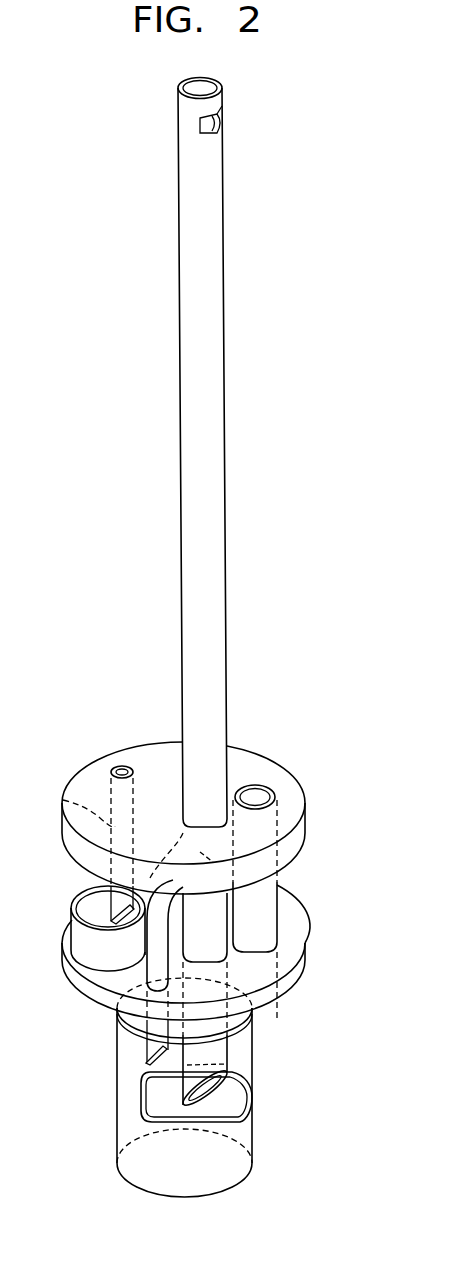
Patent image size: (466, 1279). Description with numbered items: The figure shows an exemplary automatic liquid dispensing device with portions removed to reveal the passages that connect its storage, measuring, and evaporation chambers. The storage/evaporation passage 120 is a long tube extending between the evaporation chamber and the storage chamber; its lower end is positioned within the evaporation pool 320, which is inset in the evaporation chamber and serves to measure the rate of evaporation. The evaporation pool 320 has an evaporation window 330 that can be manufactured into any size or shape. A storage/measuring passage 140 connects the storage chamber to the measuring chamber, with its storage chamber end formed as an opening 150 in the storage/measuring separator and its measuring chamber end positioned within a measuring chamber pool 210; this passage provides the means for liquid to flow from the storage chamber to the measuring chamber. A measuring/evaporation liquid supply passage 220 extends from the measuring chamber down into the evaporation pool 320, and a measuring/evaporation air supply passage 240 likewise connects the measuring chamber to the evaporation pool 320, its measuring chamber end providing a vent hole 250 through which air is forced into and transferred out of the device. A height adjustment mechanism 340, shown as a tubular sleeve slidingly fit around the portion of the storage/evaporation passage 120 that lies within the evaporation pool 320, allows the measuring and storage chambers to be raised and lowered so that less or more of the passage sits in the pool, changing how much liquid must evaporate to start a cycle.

The storage/evaporation passage 120 is at (223, 152).
The storage/measuring passage 140 is at (62, 805).
The opening 150 is at (112, 766).
The measuring chamber pool 210 is at (80, 895).
The measuring/evaporation liquid supply passage 220 is at (143, 1043).
The measuring/evaporation air supply passage 240 is at (277, 888).
The vent hole 250 is at (262, 800).
The evaporation pool 320 is at (252, 1130).
The evaporation window 330 is at (252, 1087).
The height adjustment mechanism 340 is at (227, 633).